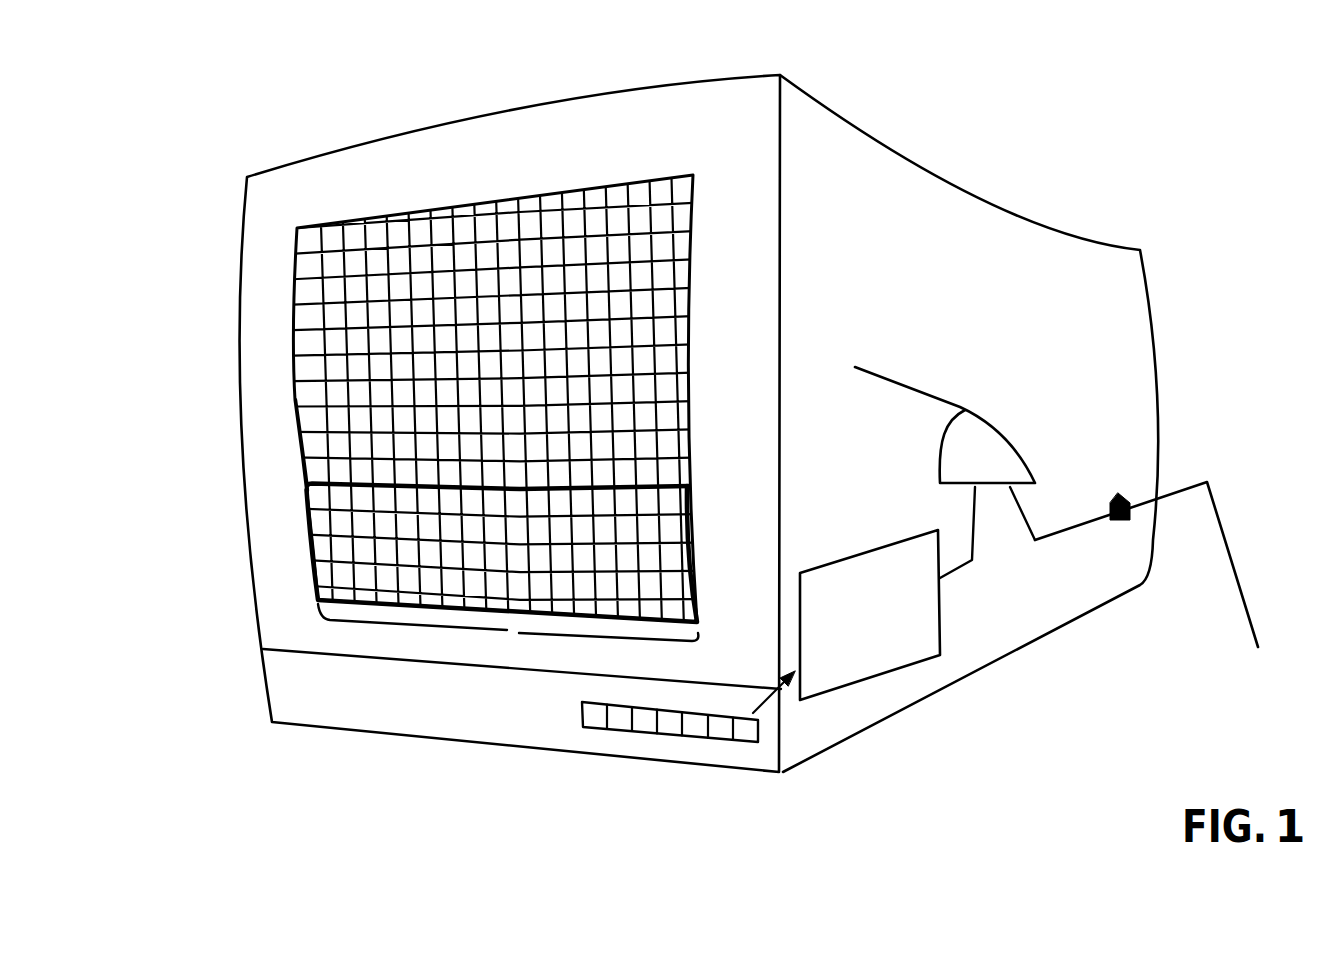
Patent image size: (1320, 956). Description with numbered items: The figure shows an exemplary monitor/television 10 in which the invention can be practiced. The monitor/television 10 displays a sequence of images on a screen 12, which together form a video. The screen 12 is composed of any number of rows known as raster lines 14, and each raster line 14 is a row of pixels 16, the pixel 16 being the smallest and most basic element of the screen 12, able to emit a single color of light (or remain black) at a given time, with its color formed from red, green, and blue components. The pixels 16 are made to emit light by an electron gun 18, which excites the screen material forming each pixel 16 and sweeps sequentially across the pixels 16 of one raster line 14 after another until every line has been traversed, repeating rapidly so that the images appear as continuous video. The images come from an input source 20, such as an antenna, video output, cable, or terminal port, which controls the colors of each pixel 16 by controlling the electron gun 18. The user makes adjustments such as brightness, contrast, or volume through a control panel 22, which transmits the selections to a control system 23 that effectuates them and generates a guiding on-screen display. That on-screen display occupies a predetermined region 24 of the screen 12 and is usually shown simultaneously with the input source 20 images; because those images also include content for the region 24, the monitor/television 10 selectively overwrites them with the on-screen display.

The monitor/television 10 is at (845, 120).
The screen 12 is at (322, 228).
The raster line 14 is at (518, 633).
The pixel 16 is at (385, 575).
The electron gun 18 is at (886, 368).
The input source 20 is at (1180, 482).
The control panel 22 is at (672, 733).
The control system 23 is at (886, 662).
The predetermined region 24 is at (305, 516).